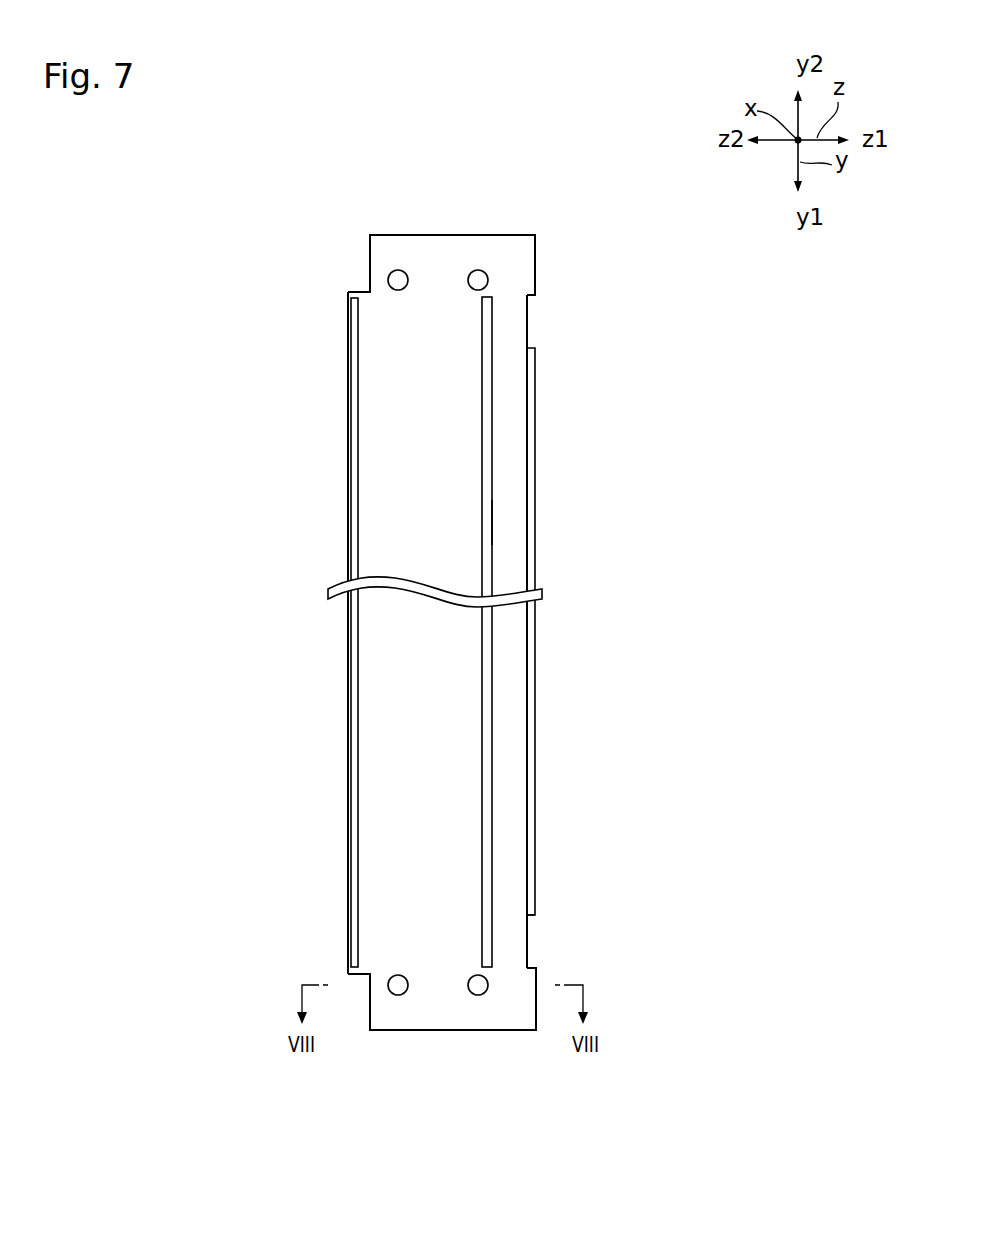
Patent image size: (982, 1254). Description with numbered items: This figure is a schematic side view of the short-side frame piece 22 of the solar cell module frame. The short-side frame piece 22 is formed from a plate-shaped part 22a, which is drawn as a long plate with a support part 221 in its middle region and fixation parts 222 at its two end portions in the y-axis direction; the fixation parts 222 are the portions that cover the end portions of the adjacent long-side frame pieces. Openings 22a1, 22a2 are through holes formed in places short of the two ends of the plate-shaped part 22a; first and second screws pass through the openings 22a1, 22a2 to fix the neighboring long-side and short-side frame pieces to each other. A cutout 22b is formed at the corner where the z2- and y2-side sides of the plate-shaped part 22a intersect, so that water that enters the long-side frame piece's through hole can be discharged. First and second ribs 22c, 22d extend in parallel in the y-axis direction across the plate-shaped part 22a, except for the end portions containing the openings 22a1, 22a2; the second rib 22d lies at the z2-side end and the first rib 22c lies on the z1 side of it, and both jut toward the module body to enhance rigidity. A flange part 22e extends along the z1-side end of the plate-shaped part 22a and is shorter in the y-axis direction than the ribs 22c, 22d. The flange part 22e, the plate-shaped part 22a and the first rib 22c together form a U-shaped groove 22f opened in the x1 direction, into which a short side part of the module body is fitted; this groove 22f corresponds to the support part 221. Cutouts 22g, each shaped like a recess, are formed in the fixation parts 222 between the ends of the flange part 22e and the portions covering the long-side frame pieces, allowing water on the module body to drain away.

The short-side frame piece 22 is at (584, 196).
The support part 221 is at (370, 520).
The fixation part 222 is at (375, 247).
The plate-shaped part 22a is at (468, 523).
The opening 22a1 is at (487, 271).
The opening 22a2 is at (405, 271).
The cutout 22b is at (370, 1000).
The first rib 22c is at (492, 653).
The second rib 22d is at (348, 709).
The flange part 22e is at (536, 360).
The groove 22f is at (527, 413).
The cutout 22g is at (528, 917).